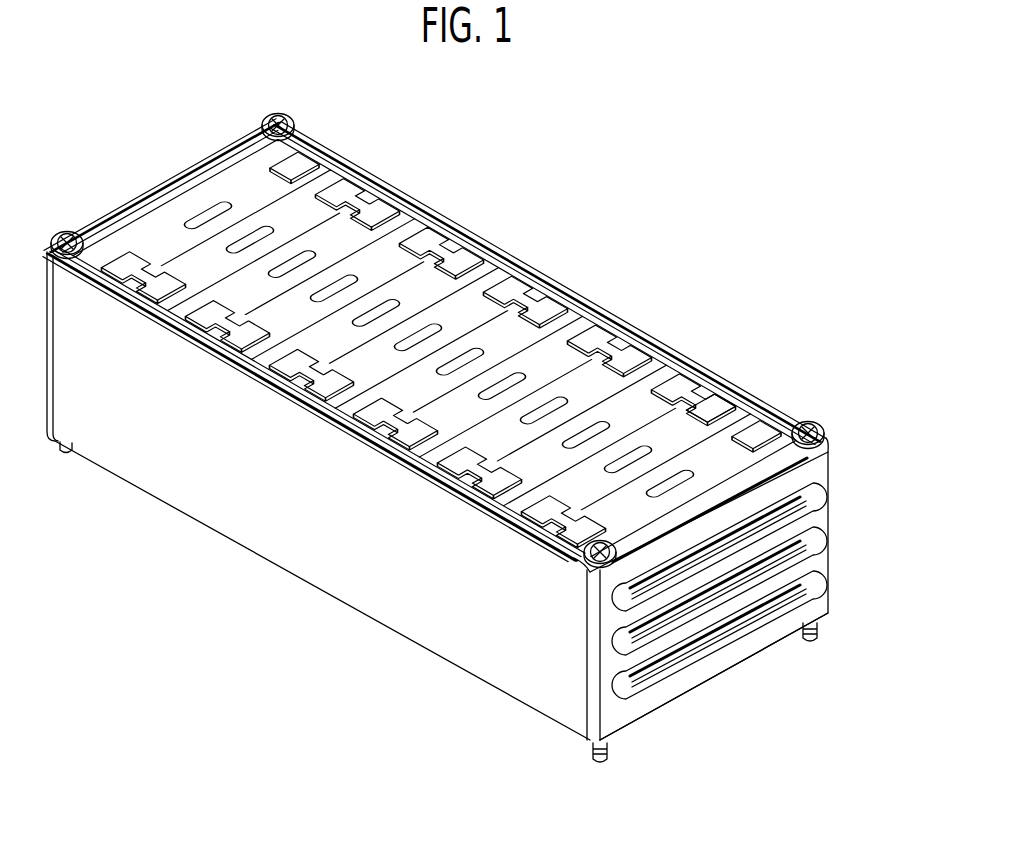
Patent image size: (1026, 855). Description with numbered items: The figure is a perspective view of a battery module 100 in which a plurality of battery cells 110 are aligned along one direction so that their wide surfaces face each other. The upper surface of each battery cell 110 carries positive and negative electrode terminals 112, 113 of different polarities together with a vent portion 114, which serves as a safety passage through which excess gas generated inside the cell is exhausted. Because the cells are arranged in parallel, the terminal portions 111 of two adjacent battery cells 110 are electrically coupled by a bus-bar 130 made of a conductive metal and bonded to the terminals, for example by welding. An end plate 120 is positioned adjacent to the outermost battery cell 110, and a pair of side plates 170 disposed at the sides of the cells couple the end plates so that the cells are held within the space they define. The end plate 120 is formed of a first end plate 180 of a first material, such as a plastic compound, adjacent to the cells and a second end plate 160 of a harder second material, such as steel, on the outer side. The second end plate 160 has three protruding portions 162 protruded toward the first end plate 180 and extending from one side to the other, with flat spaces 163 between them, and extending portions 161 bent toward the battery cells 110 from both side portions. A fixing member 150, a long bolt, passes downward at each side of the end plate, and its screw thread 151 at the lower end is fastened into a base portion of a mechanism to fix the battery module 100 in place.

The battery module 100 is at (652, 137).
The battery cell 110 is at (497, 265).
The terminal portion 111 is at (826, 366).
The positive electrode terminal 112 is at (763, 427).
The negative electrode terminal 113 is at (725, 405).
The vent portion 114 is at (670, 487).
The end plate 120 is at (843, 706).
The bus-bar 130 is at (683, 382).
The fixing member 150 is at (822, 432).
The screw thread 151 is at (601, 765).
The second end plate 160 is at (168, 186).
The extending portion 161 is at (593, 622).
The protruding portion 162 is at (783, 520).
The space 163 is at (790, 572).
The side plate 170 is at (558, 285).
The first end plate 180 is at (122, 223).